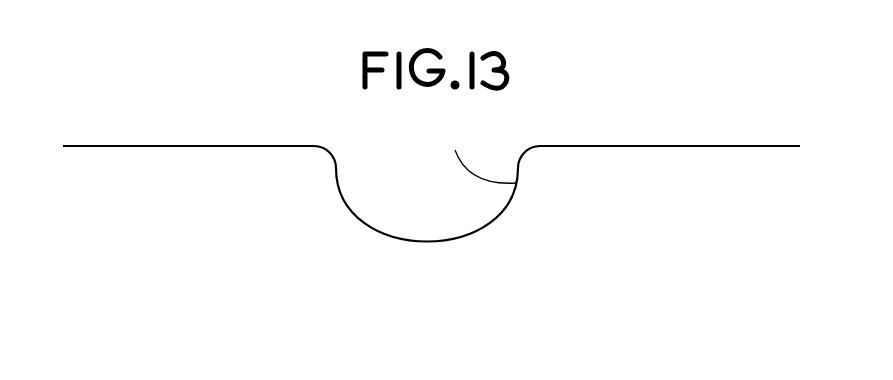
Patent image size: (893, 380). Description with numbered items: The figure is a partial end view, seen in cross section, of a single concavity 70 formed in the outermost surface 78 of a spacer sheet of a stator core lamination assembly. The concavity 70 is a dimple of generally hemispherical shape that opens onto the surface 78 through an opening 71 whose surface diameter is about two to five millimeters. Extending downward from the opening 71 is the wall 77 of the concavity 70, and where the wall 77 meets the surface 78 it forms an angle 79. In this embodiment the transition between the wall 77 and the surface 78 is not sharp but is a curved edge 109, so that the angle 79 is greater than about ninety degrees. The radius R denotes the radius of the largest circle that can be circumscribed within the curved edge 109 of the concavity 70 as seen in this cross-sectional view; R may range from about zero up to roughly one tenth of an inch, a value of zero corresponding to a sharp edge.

The concavity 70 is at (402, 200).
The opening 71 is at (355, 152).
The wall 77 is at (476, 149).
The outermost surface 78 is at (657, 144).
The angle 79 is at (335, 182).
The curved edge 109 is at (525, 144).
The radius R is at (528, 154).